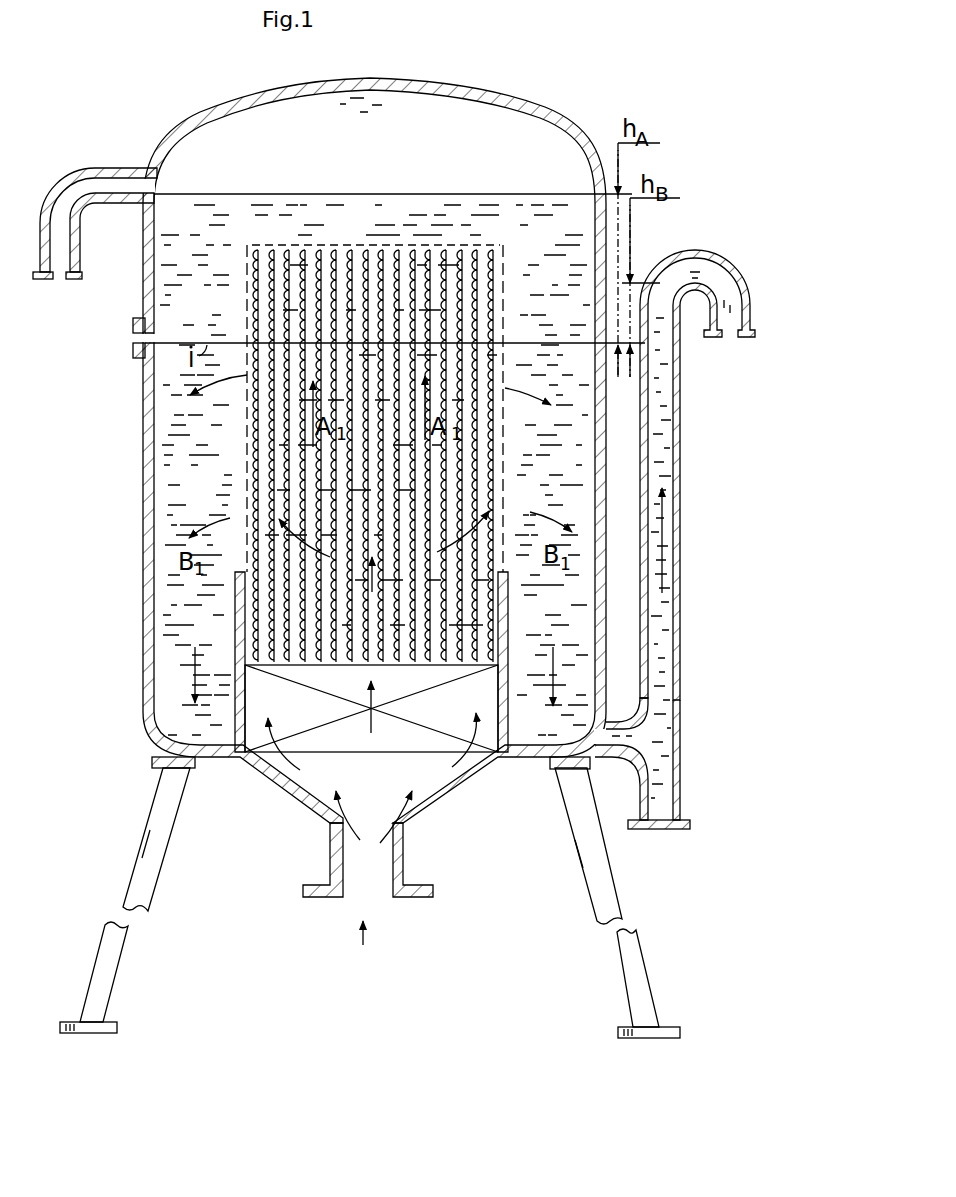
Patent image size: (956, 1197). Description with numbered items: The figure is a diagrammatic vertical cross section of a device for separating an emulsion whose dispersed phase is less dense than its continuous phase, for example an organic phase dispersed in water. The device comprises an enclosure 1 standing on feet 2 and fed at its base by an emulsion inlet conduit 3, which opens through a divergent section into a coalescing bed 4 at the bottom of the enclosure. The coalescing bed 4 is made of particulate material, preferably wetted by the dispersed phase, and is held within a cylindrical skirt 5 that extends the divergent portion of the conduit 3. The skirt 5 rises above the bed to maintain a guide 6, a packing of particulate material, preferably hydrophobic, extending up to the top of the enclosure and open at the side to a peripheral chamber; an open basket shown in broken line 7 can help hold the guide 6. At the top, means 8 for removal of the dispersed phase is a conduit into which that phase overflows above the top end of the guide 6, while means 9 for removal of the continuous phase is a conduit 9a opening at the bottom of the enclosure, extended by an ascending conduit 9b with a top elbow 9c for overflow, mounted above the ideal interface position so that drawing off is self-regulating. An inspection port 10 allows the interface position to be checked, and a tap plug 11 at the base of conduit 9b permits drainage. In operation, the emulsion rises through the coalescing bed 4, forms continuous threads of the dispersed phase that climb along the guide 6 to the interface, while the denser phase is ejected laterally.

The enclosure 1 is at (523, 100).
The feet 2 is at (160, 863).
The emulsion inlet conduit 3 is at (402, 844).
The coalescing bed 4 is at (452, 702).
The cylindrical skirt 5 is at (236, 684).
The guide 6 is at (492, 434).
The open basket 7 is at (503, 372).
The means for removal of the dispersed phase 8 is at (137, 168).
The means for removal of the continuous phase 9 is at (688, 617).
The conduit 9a is at (617, 736).
The ascending conduit 9b is at (680, 447).
The top elbow 9c is at (697, 283).
The inspection port 10 is at (134, 337).
The tap plug 11 is at (683, 830).